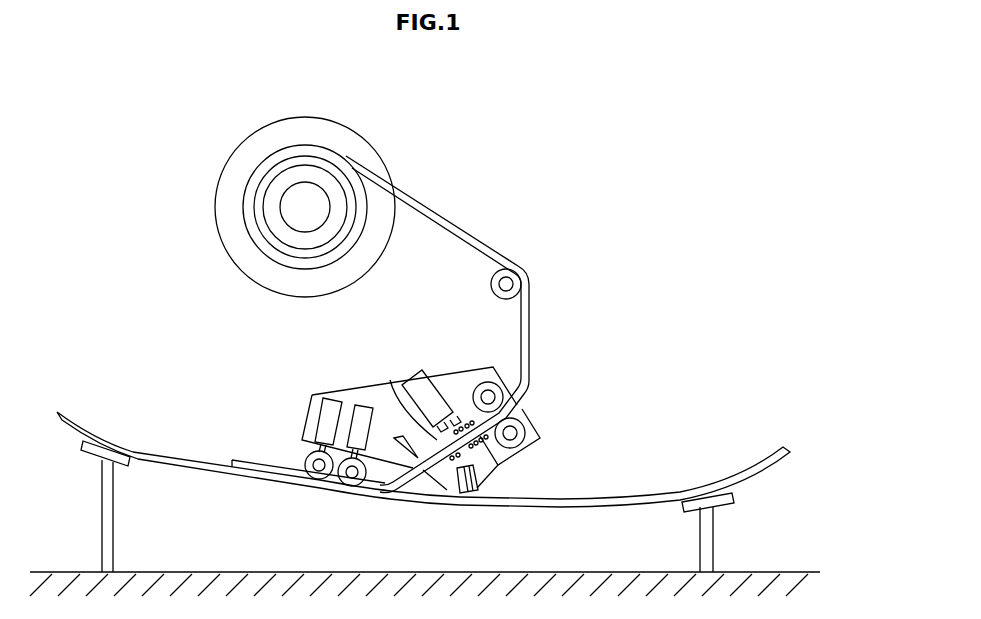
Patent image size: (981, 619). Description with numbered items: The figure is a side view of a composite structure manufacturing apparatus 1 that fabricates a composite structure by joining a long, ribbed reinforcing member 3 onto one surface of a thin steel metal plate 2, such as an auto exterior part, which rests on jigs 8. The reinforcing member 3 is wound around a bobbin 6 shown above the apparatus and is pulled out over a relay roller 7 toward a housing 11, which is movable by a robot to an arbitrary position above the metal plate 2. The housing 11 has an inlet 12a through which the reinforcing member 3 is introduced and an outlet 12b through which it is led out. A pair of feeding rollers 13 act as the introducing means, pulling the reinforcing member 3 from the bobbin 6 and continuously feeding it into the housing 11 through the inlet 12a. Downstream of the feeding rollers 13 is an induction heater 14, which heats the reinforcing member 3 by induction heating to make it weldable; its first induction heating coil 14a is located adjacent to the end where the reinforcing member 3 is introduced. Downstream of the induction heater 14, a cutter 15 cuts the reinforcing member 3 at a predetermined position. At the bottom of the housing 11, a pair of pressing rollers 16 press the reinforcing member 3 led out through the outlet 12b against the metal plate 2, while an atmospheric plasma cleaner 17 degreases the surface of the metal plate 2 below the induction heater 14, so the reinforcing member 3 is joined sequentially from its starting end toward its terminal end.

The composite structure manufacturing apparatus 1 is at (428, 418).
The metal plate 2 is at (140, 450).
The reinforcing member 3 is at (450, 225).
The bobbin 6 is at (352, 137).
The relay roller 7 is at (517, 276).
The jigs 8 is at (102, 507).
The housing 11 is at (357, 386).
The inlet 12a is at (522, 410).
The outlet 12b is at (423, 478).
The feeding rollers 13 is at (518, 458).
The induction heater 14 is at (392, 418).
The first induction heating coil 14a is at (467, 420).
The cutter 15 is at (393, 440).
The pressing rollers 16 is at (338, 486).
The atmospheric plasma cleaner 17 is at (490, 488).